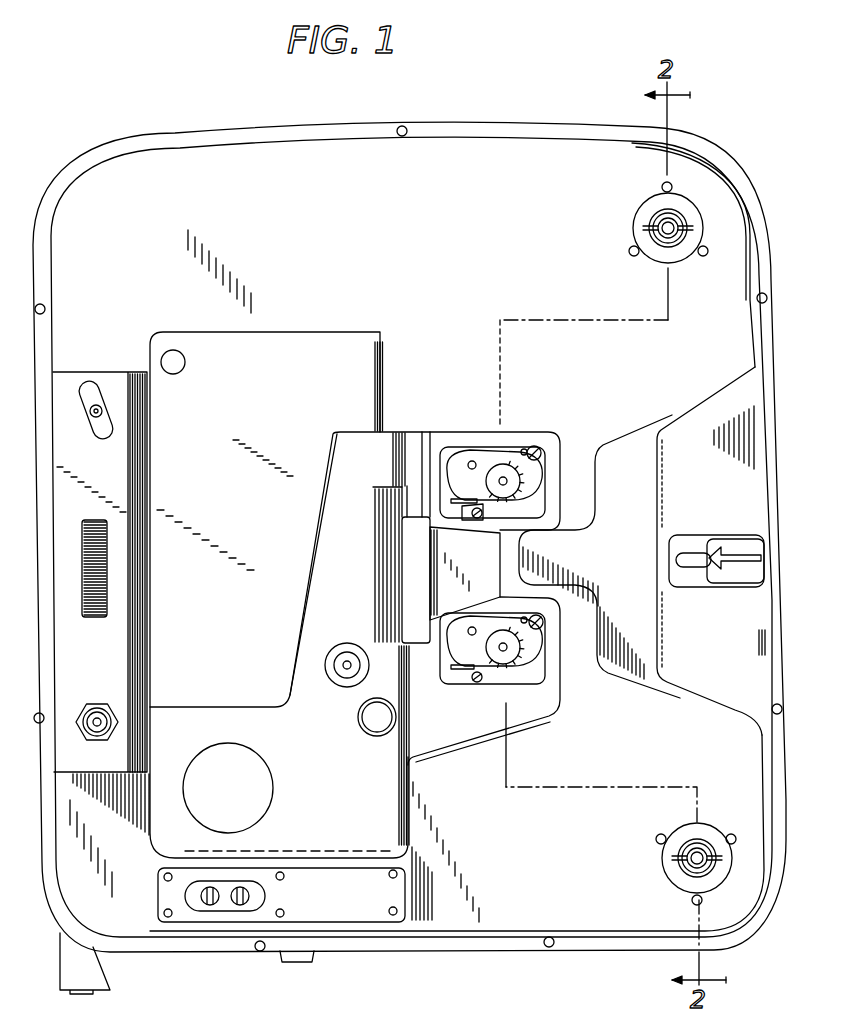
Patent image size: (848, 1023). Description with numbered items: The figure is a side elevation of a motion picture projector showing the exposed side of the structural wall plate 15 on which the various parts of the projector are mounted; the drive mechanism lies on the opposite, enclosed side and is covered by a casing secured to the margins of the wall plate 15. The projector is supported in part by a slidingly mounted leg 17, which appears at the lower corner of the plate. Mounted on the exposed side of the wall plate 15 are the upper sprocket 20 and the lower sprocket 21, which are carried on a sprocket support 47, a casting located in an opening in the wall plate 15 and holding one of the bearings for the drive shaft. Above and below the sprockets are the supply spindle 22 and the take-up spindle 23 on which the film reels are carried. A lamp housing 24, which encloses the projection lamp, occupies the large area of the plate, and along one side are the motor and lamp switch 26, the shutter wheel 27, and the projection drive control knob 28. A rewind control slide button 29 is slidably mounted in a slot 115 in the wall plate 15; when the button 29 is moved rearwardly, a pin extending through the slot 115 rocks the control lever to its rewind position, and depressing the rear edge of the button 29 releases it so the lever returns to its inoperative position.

The wall plate 15 is at (457, 202).
The slidingly mounted leg 17 is at (102, 981).
The upper sprocket 20 is at (504, 478).
The lower sprocket 21 is at (496, 688).
The supply spindle 22 is at (657, 212).
The take-up spindle 23 is at (682, 870).
The lamp housing 24 is at (320, 333).
The motor and lamp switch 26 is at (106, 672).
The shutter wheel 27 is at (93, 618).
The projection drive control knob 28 is at (99, 405).
The rewind control slide button 29 is at (723, 548).
The sprocket support 47 is at (446, 431).
The slot 115 is at (697, 572).